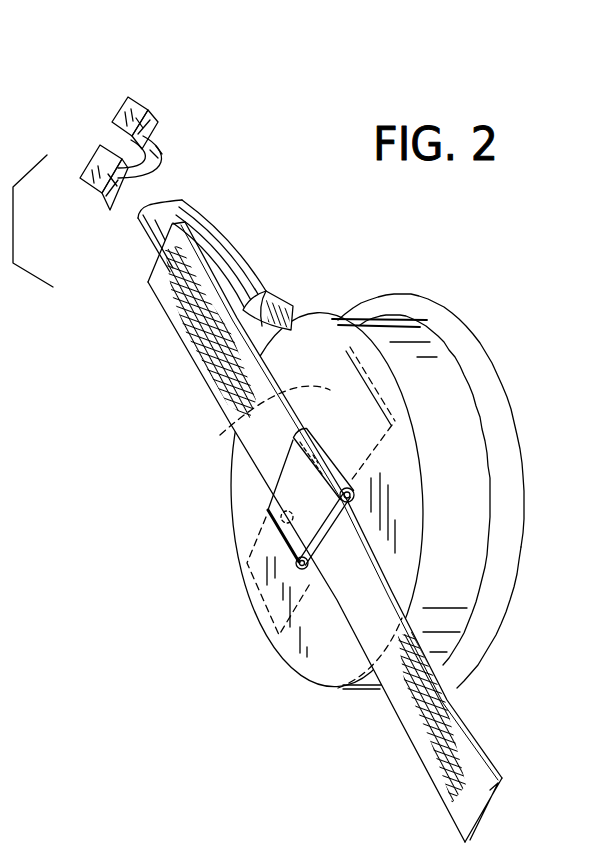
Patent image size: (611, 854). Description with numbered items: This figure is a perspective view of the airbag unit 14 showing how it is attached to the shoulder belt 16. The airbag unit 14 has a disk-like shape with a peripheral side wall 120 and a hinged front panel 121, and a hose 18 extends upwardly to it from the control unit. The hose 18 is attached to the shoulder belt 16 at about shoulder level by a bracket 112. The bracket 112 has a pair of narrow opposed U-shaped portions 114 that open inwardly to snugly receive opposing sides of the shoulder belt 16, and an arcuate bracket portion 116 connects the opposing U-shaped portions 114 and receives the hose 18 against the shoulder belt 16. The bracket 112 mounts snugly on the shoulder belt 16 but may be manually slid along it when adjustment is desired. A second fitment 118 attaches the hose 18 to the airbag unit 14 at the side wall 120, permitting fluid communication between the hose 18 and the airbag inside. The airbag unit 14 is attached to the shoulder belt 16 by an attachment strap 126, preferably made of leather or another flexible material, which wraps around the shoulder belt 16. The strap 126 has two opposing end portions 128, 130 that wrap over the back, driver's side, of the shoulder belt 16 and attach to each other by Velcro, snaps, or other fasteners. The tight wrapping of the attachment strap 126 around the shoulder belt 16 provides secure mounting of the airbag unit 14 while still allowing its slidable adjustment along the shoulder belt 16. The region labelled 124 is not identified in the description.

The airbag unit 14 is at (458, 308).
The shoulder belt 16 is at (166, 320).
The hose 18 is at (227, 253).
The bracket 112 is at (138, 119).
The U-shaped portions 114 is at (83, 170).
The arcuate bracket portion 116 is at (168, 162).
The second fitment 118 is at (293, 300).
The peripheral side wall 120 is at (445, 382).
The hinged front panel 121 is at (523, 565).
The reel side wall 124 is at (455, 473).
The attachment strap 126 is at (282, 484).
The end portion 128 is at (243, 562).
The end portion 130 is at (240, 391).